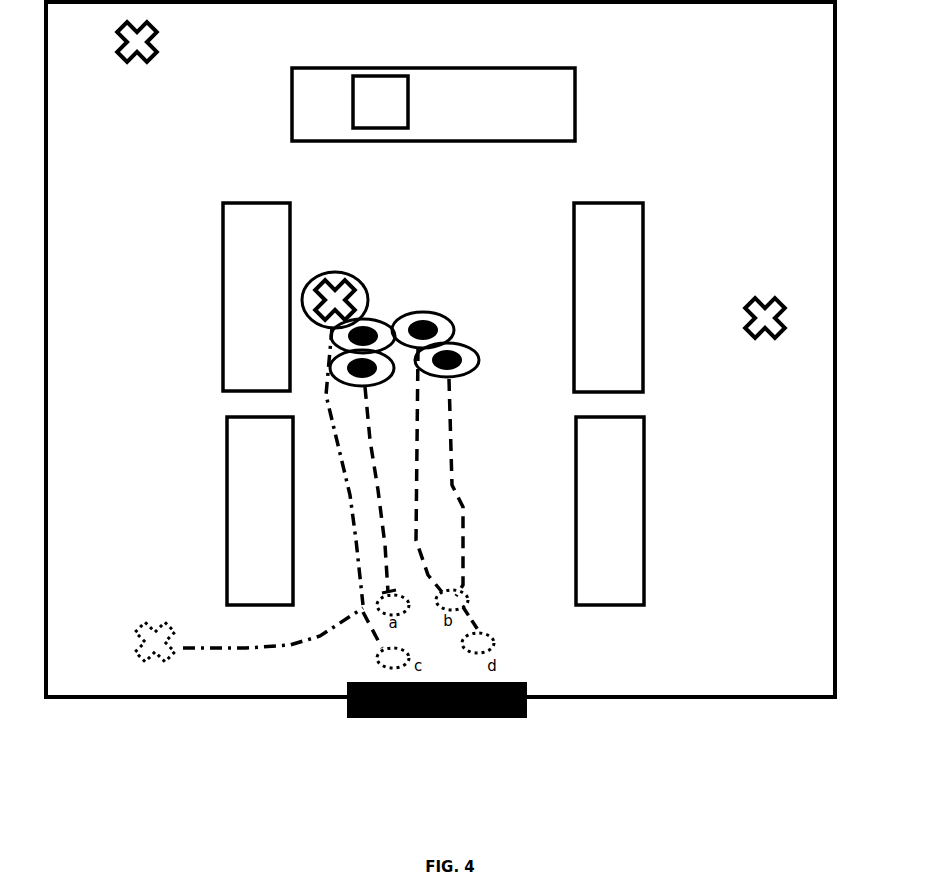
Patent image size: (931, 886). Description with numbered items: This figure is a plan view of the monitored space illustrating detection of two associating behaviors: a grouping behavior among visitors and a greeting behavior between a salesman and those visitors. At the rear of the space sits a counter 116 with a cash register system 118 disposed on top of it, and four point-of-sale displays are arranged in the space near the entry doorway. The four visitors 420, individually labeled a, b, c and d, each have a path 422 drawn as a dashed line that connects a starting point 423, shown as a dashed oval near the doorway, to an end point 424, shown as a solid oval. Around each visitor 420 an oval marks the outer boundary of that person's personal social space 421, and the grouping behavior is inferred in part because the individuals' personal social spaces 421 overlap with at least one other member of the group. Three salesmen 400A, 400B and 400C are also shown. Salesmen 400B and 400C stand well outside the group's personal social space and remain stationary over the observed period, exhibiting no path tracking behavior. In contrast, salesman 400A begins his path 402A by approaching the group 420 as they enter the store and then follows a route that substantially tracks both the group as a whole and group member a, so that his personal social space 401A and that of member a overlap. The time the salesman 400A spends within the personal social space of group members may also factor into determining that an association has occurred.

The counter 116 is at (483, 112).
The cash register system 118 is at (366, 112).
The salesman 400A is at (357, 290).
The salesman 400B is at (153, 63).
The salesman 400C is at (760, 297).
The personal social space 401A is at (320, 272).
The path 402A is at (205, 647).
The visitors 420 is at (440, 327).
The personal social space 421 is at (443, 312).
The paths 422 is at (463, 507).
The starting point 423 is at (493, 635).
The end point 424 is at (468, 353).